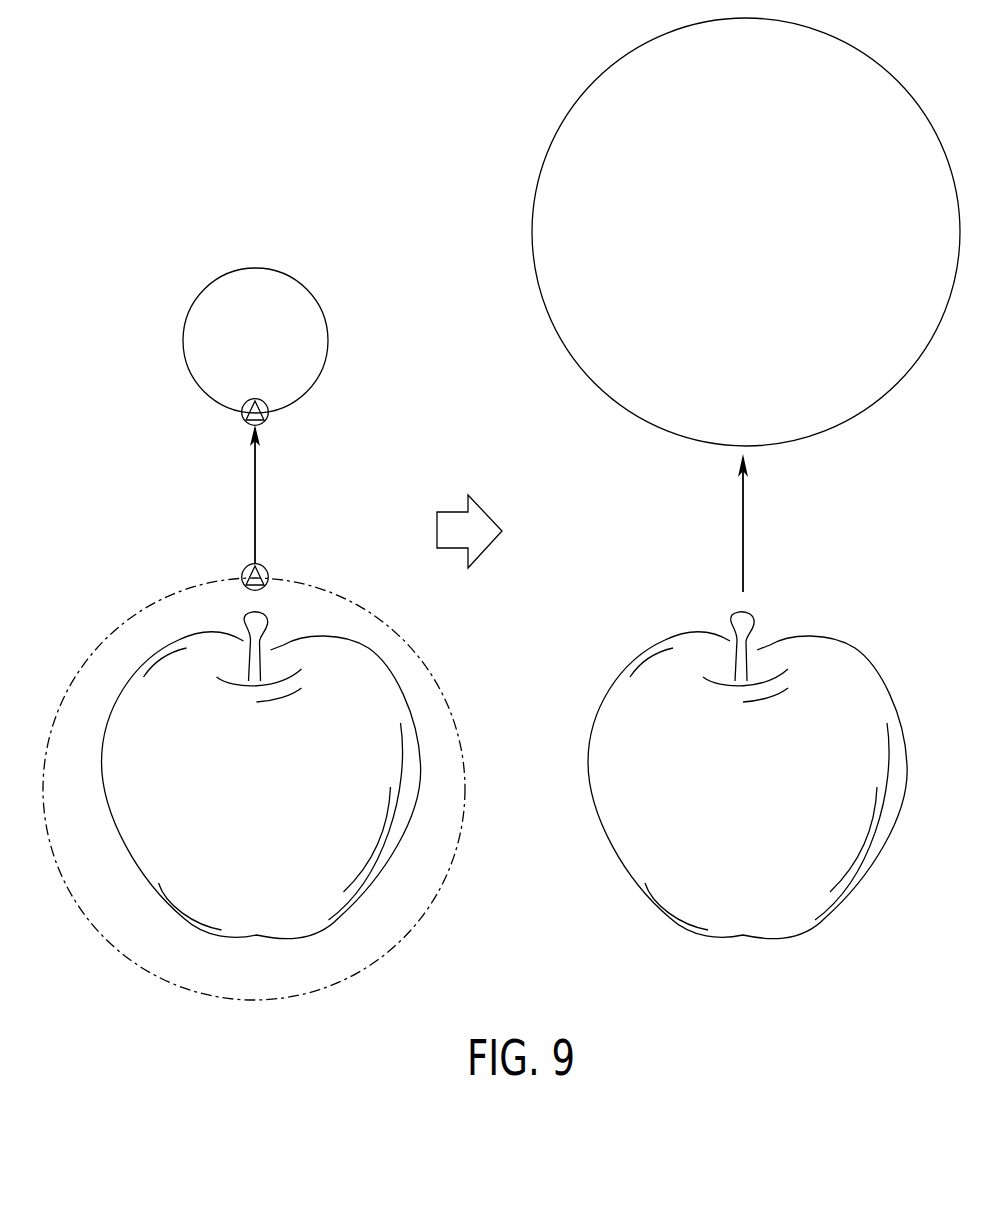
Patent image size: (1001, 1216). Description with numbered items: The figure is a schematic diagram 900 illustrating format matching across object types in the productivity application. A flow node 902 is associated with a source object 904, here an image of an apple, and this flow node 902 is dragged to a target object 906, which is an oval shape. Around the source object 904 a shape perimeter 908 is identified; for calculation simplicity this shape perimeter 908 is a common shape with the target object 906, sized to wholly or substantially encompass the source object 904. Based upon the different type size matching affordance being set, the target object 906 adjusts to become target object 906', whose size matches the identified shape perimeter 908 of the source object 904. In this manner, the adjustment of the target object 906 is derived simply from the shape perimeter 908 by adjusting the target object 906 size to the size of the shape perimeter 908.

The scene/process overview 900 is at (164, 162).
The flow node 902 is at (266, 568).
The source object 904 is at (278, 980).
The target object 906 is at (255, 340).
The target object 906' is at (746, 232).
The shape perimeter 908 is at (134, 614).